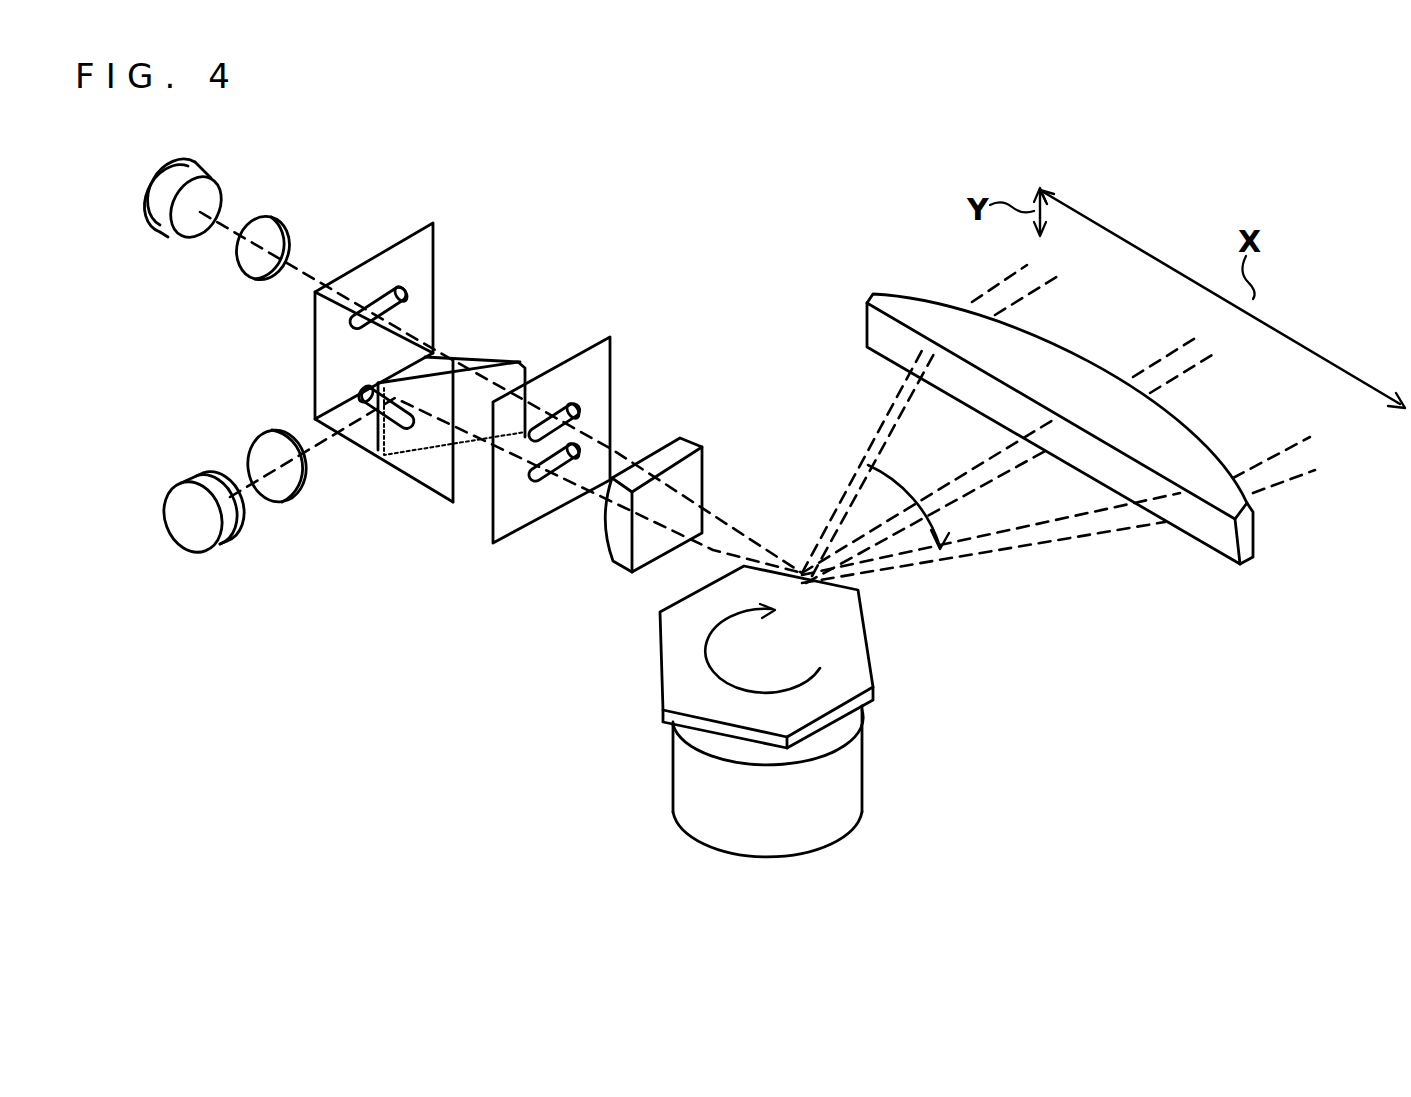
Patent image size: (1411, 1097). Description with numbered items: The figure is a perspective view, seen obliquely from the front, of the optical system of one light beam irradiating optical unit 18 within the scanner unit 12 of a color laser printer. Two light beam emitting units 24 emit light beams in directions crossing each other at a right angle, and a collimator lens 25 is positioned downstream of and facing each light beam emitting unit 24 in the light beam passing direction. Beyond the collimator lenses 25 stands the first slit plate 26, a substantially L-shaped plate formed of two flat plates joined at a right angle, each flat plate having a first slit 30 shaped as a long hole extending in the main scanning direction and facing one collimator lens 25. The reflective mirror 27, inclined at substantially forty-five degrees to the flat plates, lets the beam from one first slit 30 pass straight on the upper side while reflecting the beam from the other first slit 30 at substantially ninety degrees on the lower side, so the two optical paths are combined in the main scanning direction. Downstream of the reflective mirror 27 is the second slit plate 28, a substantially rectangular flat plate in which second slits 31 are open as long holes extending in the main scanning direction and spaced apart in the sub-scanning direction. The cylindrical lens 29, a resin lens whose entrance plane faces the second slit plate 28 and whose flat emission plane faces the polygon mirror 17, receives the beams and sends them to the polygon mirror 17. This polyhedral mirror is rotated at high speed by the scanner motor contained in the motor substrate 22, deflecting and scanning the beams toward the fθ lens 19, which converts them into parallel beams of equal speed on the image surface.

The scanner unit 12 is at (772, 951).
The polygon mirror 17 is at (850, 627).
The light beam irradiating optical unit 18 is at (379, 526).
The fθ lens 19 is at (1202, 528).
The motor substrate 22 is at (852, 782).
The light beam emitting unit 24 is at (210, 192).
The collimator lens 25 is at (282, 237).
The first slit plate 26 is at (425, 260).
The reflective mirror 27 is at (508, 325).
The second slit plate 28 is at (597, 363).
The cylindrical lens 29 is at (690, 470).
The first slit 30 is at (395, 292).
The second slit 31 is at (568, 452).